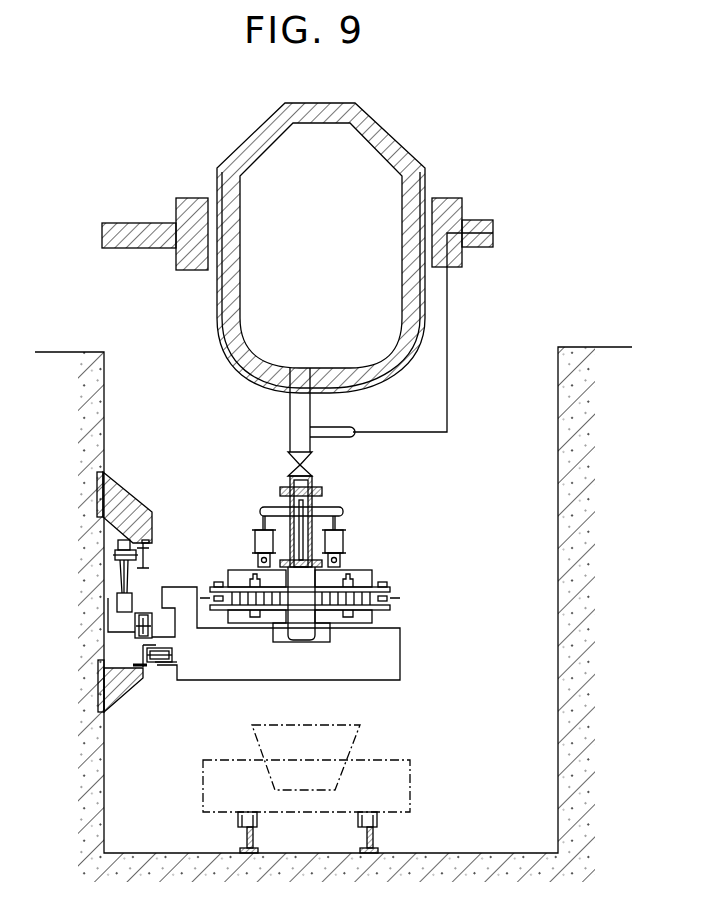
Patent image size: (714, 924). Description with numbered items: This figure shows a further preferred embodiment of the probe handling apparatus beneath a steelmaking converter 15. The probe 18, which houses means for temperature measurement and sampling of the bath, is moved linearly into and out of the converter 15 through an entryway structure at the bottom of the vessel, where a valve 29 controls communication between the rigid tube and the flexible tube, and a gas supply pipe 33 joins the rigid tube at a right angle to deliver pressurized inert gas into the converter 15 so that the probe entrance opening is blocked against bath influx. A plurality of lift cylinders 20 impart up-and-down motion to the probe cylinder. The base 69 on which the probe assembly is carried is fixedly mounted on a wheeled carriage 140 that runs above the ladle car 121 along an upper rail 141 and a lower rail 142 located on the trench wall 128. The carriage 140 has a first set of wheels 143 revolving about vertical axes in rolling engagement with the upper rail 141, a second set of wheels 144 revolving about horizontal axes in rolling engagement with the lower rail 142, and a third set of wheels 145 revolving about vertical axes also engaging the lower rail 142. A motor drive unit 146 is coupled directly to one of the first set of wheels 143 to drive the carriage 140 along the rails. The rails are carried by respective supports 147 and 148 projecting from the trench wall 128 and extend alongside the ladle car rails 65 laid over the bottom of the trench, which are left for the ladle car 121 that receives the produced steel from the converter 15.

The converter 15 is at (416, 139).
The probe 18 is at (302, 508).
The lift cylinders 20 is at (262, 545).
The valve 29 is at (290, 460).
The gas supply pipe 33 is at (354, 430).
The rails 65 is at (244, 838).
The base 69 is at (372, 612).
The ladle car 121 is at (412, 773).
The trench wall 128 is at (106, 376).
The wheeled carriage 140 is at (287, 670).
The upper rail 141 is at (149, 552).
The lower rail 142 is at (141, 648).
The first set of wheels 143 is at (115, 560).
The second set of wheels 144 is at (143, 615).
The third set of wheels 145 is at (148, 663).
The motor drive unit 146 is at (117, 603).
The support 147 is at (120, 497).
The support 148 is at (117, 690).